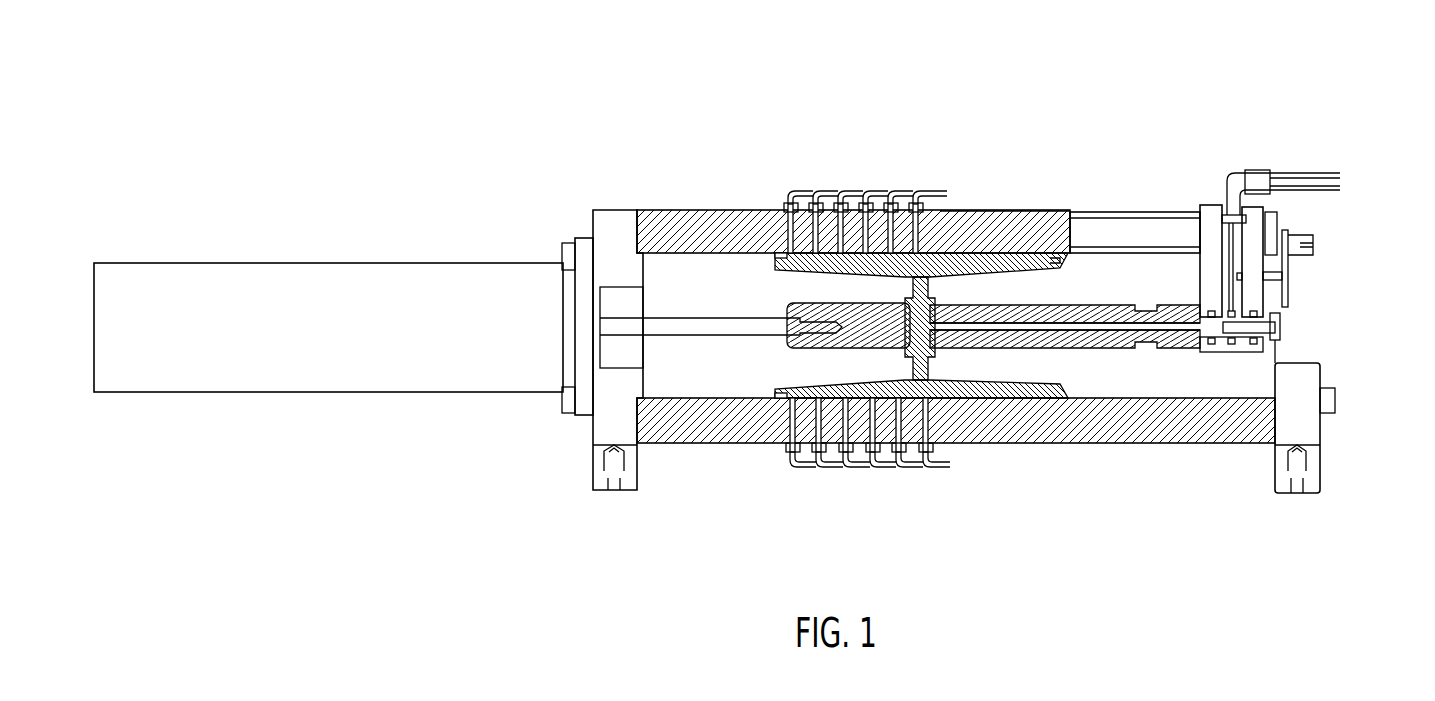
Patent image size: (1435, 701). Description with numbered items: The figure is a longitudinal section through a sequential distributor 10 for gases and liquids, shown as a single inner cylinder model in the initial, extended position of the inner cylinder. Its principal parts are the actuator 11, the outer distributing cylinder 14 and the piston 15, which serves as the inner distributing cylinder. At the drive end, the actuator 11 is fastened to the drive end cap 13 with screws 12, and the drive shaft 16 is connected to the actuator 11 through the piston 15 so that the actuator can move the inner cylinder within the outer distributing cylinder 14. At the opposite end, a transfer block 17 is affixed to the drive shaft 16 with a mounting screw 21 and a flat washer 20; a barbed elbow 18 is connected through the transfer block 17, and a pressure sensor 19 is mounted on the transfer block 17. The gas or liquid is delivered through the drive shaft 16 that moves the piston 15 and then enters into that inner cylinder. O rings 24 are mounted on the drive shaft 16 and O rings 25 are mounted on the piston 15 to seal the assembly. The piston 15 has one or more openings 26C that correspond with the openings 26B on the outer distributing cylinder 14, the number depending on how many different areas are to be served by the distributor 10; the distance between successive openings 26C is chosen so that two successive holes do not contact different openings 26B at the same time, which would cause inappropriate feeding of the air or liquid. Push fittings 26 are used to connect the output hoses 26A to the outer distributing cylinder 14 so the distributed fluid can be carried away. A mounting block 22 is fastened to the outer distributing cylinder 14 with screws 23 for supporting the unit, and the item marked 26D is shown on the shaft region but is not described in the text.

The sequential distributor 10 is at (893, 132).
The actuator 11 is at (322, 262).
The screws 12 is at (575, 240).
The drive end cap 13 is at (612, 210).
The outer distributing cylinder 14 is at (712, 210).
The piston 15 is at (1068, 275).
The drive shaft 16 is at (1117, 303).
The transfer block 17 is at (1210, 204).
The barbed elbow 18 is at (1231, 170).
The pressure sensor 19 is at (1313, 243).
The flat washer 20 is at (1278, 313).
The mounting screw 21 is at (1284, 330).
The mounting block 22 is at (1320, 428).
The screws 23 is at (1337, 404).
The O rings 24 is at (1235, 352).
The O rings 25 is at (1056, 394).
The push fittings 26 is at (787, 453).
The output hoses 26A is at (857, 190).
The openings on outer distributing cylinder 26B is at (957, 212).
The openings on inner cylinder 26C is at (922, 398).
The shaft heater gap 26D is at (1100, 330).